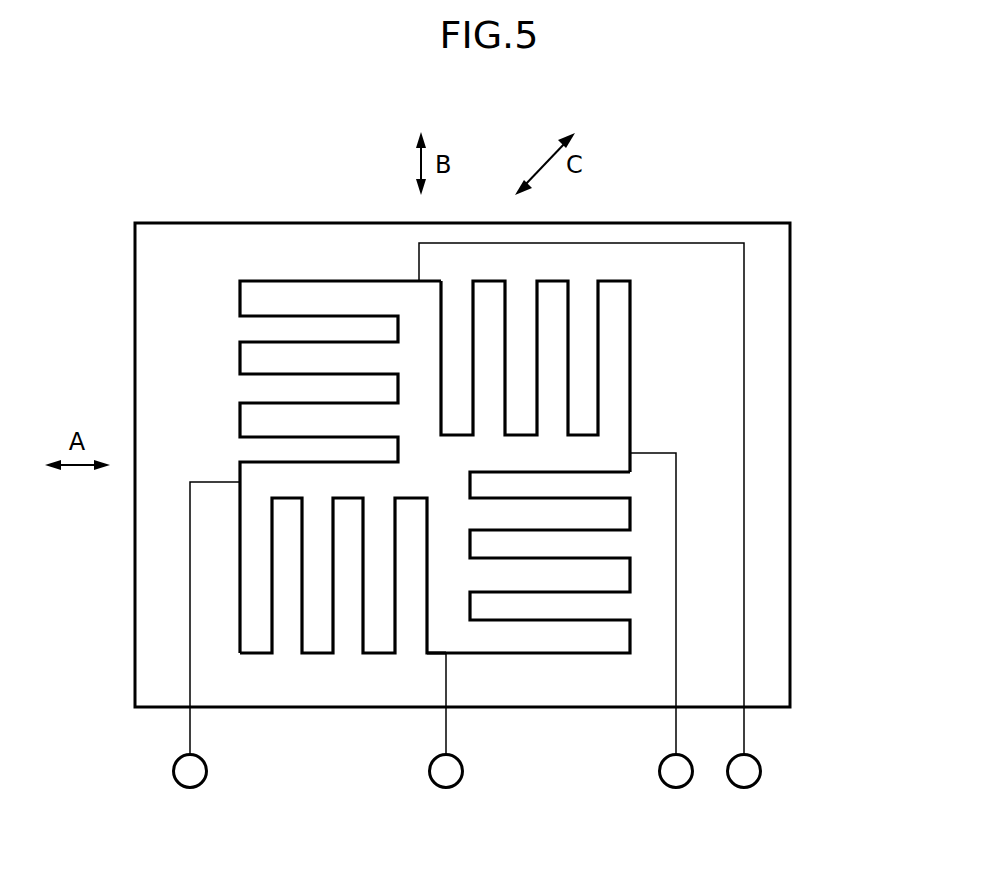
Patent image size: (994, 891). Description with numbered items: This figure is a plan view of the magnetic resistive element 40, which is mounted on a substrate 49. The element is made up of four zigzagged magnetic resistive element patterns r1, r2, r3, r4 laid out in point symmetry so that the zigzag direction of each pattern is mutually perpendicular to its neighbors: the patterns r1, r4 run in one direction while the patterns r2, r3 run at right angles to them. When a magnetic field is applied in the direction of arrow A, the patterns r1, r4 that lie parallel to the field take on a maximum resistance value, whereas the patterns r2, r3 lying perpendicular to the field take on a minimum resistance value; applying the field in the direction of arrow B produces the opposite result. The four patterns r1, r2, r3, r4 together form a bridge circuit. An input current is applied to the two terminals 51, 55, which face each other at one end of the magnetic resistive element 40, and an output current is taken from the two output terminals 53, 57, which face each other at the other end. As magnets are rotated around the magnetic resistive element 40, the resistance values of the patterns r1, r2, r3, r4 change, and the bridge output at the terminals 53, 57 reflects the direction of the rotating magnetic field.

The magnetic resistive element 40 is at (526, 465).
The substrate 49 is at (790, 503).
The terminal 51 is at (744, 788).
The output terminal 53 is at (190, 788).
The terminal 55 is at (446, 788).
The output terminal 57 is at (676, 788).
The magnetic resistive element pattern r1 is at (319, 467).
The magnetic resistive element pattern r2 is at (343, 595).
The magnetic resistive element pattern r3 is at (559, 376).
The magnetic resistive element pattern r4 is at (528, 582).